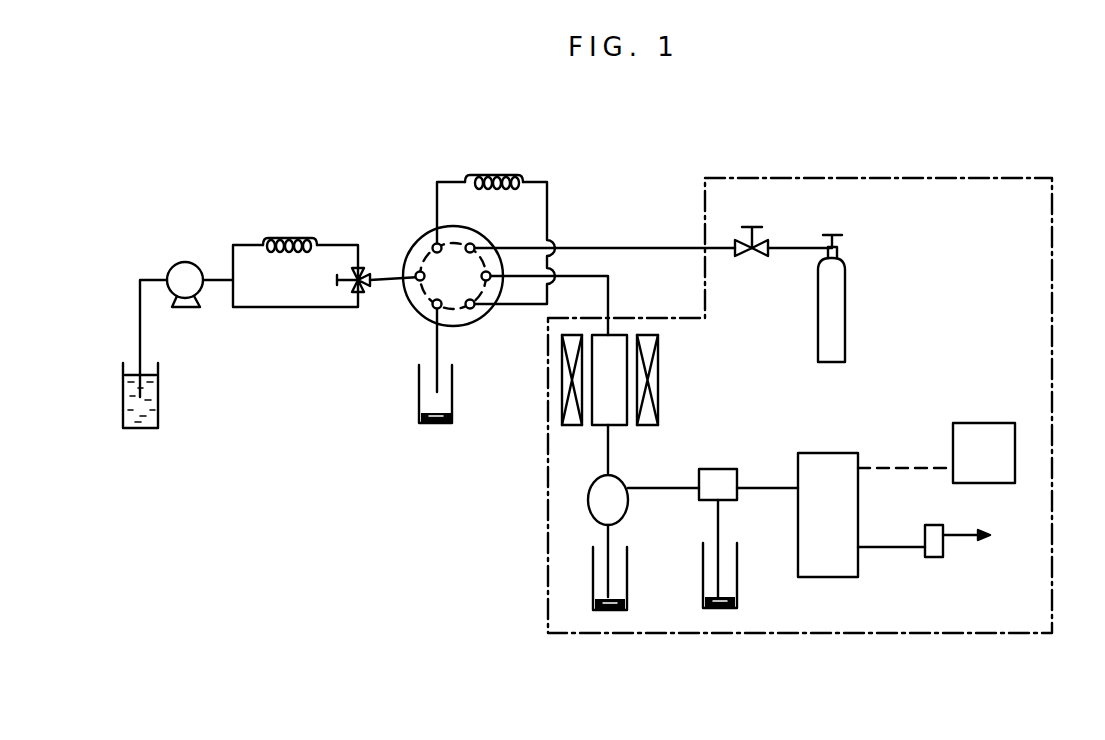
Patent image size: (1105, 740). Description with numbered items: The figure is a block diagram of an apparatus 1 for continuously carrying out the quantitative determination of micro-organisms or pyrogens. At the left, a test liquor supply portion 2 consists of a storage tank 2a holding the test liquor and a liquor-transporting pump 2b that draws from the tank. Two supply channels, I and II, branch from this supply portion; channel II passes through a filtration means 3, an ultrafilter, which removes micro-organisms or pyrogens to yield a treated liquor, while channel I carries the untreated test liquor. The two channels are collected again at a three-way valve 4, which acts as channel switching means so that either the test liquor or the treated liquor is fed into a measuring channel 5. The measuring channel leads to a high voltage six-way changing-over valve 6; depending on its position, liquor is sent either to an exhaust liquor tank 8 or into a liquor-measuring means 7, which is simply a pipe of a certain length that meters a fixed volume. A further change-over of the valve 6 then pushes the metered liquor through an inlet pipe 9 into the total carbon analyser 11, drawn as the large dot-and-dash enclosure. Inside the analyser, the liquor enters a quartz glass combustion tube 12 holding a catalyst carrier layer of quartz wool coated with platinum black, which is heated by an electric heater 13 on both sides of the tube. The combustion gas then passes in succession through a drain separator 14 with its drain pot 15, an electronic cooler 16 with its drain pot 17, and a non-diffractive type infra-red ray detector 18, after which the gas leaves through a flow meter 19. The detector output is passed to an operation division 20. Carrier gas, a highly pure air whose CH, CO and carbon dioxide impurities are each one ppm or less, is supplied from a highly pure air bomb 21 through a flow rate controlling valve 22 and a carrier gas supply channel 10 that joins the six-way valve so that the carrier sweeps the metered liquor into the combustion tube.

The apparatus for quantitative determination of micro-organisms or pyrogens 1 is at (372, 517).
The test liquor supply portion 2 is at (202, 254).
The storage tank 2a is at (137, 430).
The liquor-transporting pump 2b is at (188, 290).
The filtration means for removing micro-organisms 3 is at (317, 242).
The three-way valve 4 is at (335, 283).
The measuring channel 5 is at (385, 274).
The high voltage six-way changing-over valve 6 is at (415, 309).
The liquor-measuring means 7 is at (523, 177).
The exhaust liquor tank 8 is at (418, 403).
The inlet pipe 9 is at (583, 270).
The carrier gas supply channel 10 is at (615, 246).
The total carbon analyser 11 is at (768, 620).
The combustion tube 12 is at (602, 423).
The electric heater 13 is at (562, 418).
The drain separator 14 is at (600, 507).
The drain pot 15 is at (605, 613).
The electronic cooler 16 is at (712, 475).
The drain pot 17 is at (722, 613).
The non-diffractive type infra-red ray detector 18 is at (833, 565).
The flow meter 19 is at (933, 558).
The operation division 20 is at (1008, 462).
The highly pure air bomb 21 is at (847, 293).
The flow rate controlling valve 22 is at (757, 238).